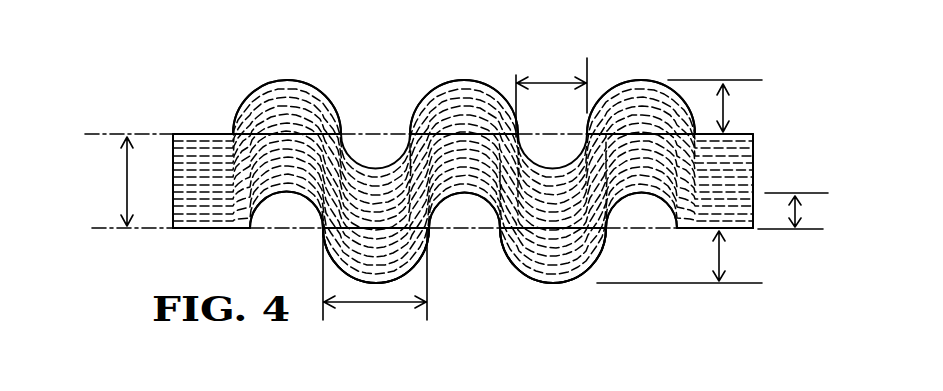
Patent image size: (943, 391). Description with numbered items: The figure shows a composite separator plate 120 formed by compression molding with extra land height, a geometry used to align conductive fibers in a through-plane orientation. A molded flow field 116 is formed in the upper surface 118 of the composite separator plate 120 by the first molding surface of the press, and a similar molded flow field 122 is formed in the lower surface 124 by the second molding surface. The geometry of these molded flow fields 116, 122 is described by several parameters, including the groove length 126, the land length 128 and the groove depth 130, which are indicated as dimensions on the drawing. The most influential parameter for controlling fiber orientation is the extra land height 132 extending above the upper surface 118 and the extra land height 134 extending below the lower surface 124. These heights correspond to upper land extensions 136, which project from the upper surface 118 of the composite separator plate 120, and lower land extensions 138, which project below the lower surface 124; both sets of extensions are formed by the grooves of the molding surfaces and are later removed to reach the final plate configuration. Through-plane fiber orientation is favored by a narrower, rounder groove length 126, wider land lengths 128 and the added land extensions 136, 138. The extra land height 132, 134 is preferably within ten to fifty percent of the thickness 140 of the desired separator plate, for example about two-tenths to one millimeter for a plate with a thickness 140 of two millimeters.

The molded flow field 116 is at (427, 80).
The upper surface 118 is at (192, 132).
The composite separator plate 120 is at (787, 179).
The molded flow field 122 is at (511, 300).
The lower surface 124 is at (187, 232).
The groove length 126 is at (549, 82).
The land length 128 is at (370, 303).
The groove depth 130 is at (799, 218).
The extra land height 132 is at (727, 110).
The extra land height 134 is at (723, 250).
The upper land extensions 136 is at (263, 100).
The lower land extensions 138 is at (342, 250).
The thickness 140 is at (126, 184).